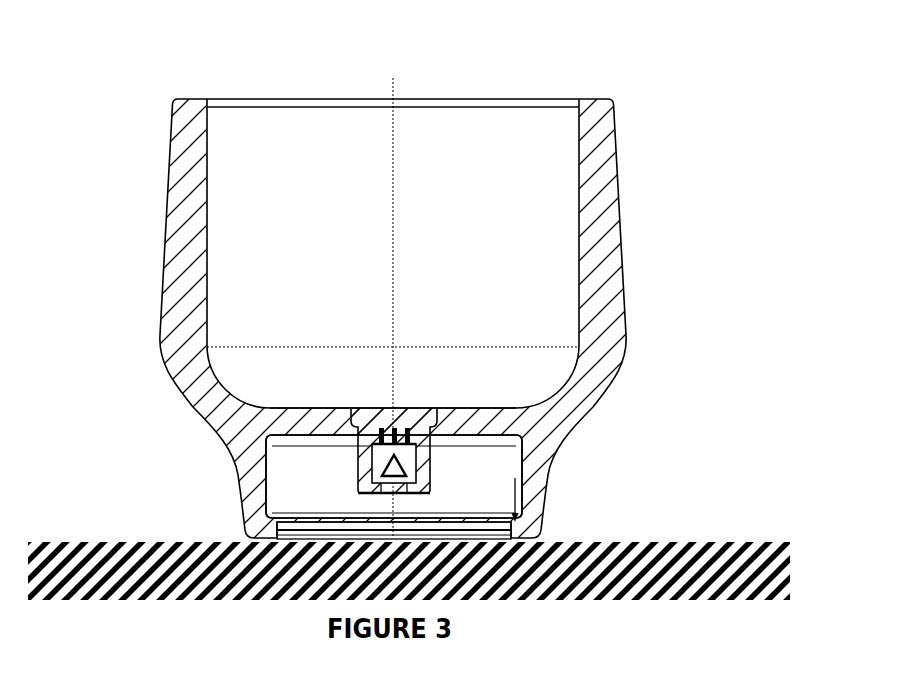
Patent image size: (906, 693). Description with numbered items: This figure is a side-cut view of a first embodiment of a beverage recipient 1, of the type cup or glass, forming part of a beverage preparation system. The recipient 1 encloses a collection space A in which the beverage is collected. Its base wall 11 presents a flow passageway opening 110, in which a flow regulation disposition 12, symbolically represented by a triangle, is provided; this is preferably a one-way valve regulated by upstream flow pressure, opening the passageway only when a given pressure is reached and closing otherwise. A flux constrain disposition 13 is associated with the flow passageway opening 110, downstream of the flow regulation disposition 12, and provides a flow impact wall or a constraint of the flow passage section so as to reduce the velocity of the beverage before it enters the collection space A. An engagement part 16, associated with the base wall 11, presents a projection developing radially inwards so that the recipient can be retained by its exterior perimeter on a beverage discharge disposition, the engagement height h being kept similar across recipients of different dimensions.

The beverage recipient 1 is at (375, 298).
The collection space A is at (393, 307).
The base wall 11 is at (303, 404).
The flux constrain disposition 13 is at (423, 440).
The flow regulation disposition 12 is at (379, 475).
The flow passageway opening 110 is at (394, 476).
The engagement part 16 is at (440, 522).
The engagement height h is at (501, 500).